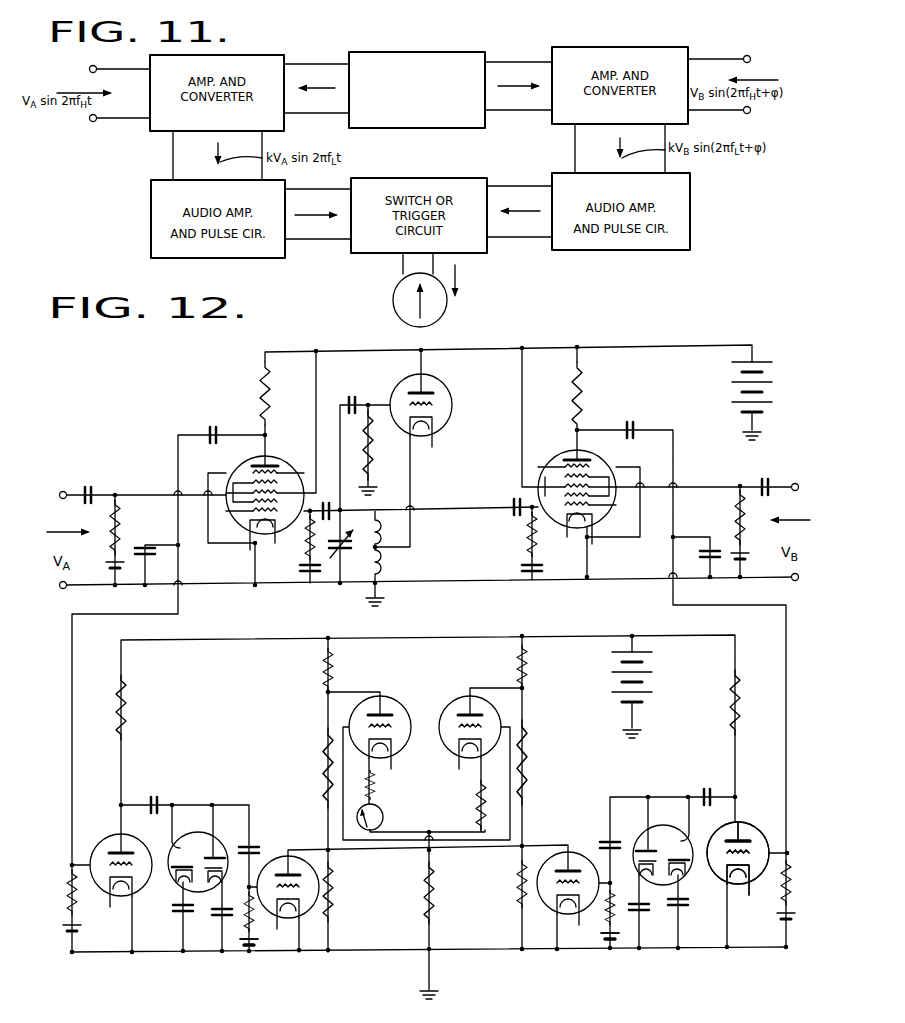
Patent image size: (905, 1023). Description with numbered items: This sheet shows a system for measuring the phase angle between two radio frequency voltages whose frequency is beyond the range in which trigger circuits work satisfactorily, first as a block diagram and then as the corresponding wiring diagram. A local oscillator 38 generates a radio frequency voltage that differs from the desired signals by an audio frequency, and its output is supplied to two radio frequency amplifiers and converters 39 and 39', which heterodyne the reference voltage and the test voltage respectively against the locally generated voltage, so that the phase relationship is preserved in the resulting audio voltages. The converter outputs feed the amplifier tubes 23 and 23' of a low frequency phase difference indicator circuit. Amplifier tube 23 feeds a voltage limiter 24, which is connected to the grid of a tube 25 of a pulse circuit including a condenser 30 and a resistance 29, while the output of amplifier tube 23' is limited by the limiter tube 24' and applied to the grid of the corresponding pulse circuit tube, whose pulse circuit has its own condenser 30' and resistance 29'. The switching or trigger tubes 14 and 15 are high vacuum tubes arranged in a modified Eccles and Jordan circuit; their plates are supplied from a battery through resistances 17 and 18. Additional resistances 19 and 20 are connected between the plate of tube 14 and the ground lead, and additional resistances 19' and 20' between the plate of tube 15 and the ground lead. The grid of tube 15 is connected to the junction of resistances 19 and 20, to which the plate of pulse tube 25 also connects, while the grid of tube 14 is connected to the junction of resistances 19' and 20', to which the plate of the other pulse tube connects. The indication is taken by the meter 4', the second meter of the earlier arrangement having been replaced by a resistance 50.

In FIG. 11, the oscillator 38 is at (368, 52).
In FIG. 12, the oscillator 38 is at (478, 459).
In FIG. 12, the radio frequency amplifier and converter 39 is at (245, 499).
In FIG. 12, the radio frequency amplifier and converter 39' is at (591, 494).
In FIG. 12, the resistance 17 is at (326, 656).
In FIG. 12, the resistance 18 is at (530, 660).
In FIG. 12, the additional resistance 19 is at (315, 768).
In FIG. 12, the additional resistance 19' is at (542, 762).
In FIG. 12, the switching or trigger tube 14 is at (388, 700).
In FIG. 12, the switching or trigger tube 15 is at (464, 696).
In FIG. 12, the meter 4' is at (382, 810).
In FIG. 12, the resistance 50 is at (478, 801).
In FIG. 12, the amplifier tube 23 is at (428, 863).
In FIG. 12, the amplifier tube 23' is at (740, 851).
In FIG. 12, the voltage limiter 24 is at (198, 840).
In FIG. 12, the limiter tube 24' is at (663, 829).
In FIG. 12, the condenser 30 is at (254, 841).
In FIG. 12, the condenser 30' is at (607, 815).
In FIG. 12, the pulse circuit tube 25 is at (299, 856).
In FIG. 12, the resistance 29 is at (267, 937).
In FIG. 12, the resistance 29' is at (592, 935).
In FIG. 12, the additional resistance 20 is at (344, 892).
In FIG. 12, the additional resistance 20' is at (507, 886).